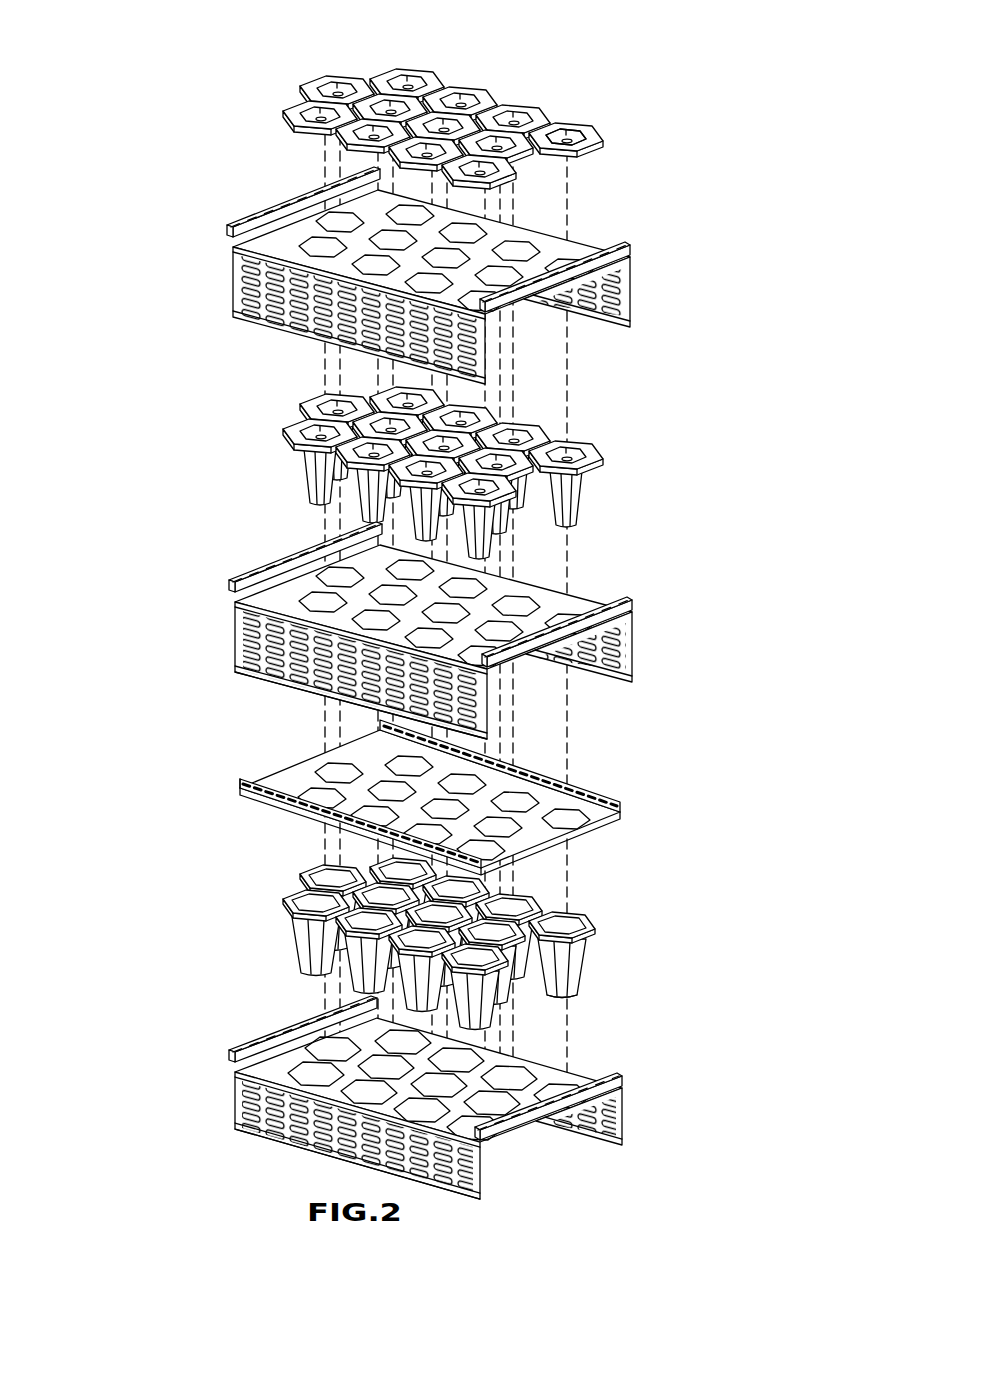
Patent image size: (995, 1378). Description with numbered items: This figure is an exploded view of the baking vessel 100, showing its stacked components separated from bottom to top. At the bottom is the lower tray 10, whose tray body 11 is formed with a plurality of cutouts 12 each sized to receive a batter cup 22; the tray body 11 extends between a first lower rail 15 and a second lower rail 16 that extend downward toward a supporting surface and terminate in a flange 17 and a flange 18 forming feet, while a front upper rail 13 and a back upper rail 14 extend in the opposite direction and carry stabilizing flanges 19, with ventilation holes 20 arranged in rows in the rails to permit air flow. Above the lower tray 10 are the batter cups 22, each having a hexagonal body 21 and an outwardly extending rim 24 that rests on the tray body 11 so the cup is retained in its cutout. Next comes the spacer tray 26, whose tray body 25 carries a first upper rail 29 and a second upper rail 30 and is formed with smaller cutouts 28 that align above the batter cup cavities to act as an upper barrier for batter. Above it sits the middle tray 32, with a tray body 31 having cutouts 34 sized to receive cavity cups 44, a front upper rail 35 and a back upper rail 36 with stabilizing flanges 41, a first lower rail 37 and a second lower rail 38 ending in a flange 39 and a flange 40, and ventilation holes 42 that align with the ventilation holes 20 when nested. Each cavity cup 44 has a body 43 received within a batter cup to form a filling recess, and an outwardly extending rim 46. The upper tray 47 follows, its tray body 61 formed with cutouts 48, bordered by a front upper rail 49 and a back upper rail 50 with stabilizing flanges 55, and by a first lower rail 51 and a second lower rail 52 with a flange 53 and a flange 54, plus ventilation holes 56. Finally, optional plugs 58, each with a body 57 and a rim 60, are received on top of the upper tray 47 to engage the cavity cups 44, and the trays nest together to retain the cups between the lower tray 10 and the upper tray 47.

The baking vessel 100 is at (95, 82).
The lower tray 10 is at (429, 991).
The tray body 11 is at (240, 1070).
The cutouts 12 is at (302, 1050).
The front upper rail 13 is at (300, 1060).
The back upper rail 14 is at (600, 1085).
The first lower rail 15 is at (628, 1125).
The second lower rail 16 is at (240, 1110).
The flange 17 is at (626, 1135).
The flange 18 is at (325, 1160).
The stabilizing flanges 19 is at (535, 1118).
The ventilation holes 20 is at (472, 1190).
The body 21 is at (590, 975).
The batter cups 22 is at (440, 944).
The rim 24 is at (302, 905).
The tray body 25 is at (560, 780).
The spacer tray 26 is at (300, 778).
The cutouts 28 is at (590, 832).
The first upper rail 29 is at (600, 808).
The second upper rail 30 is at (440, 795).
The tray body 31 is at (414, 597).
The middle tray 32 is at (243, 628).
The cutouts 34 is at (300, 580).
The front upper rail 35 is at (305, 600).
The back upper rail 36 is at (616, 598).
The first lower rail 37 is at (631, 655).
The second lower rail 38 is at (240, 664).
The flange 39 is at (632, 680).
The flange 40 is at (288, 688).
The stabilizing flanges 41 is at (312, 568).
The ventilation holes 42 is at (305, 716).
The body 43 is at (320, 458).
The cavity cups 44 is at (590, 485).
The rim 46 is at (450, 473).
The upper tray 47 is at (594, 248).
The cutouts 48 is at (306, 213).
The front upper rail 49 is at (310, 240).
The back upper rail 50 is at (633, 257).
The first lower rail 51 is at (630, 282).
The second lower rail 52 is at (243, 270).
The flange 53 is at (632, 330).
The flange 54 is at (246, 316).
The stabilizing flanges 55 is at (242, 232).
The ventilation holes 56 is at (240, 303).
The body 57 is at (485, 130).
The optional plugs 58 is at (575, 122).
The rim 60 is at (600, 138).
The tray body 61 is at (403, 260).